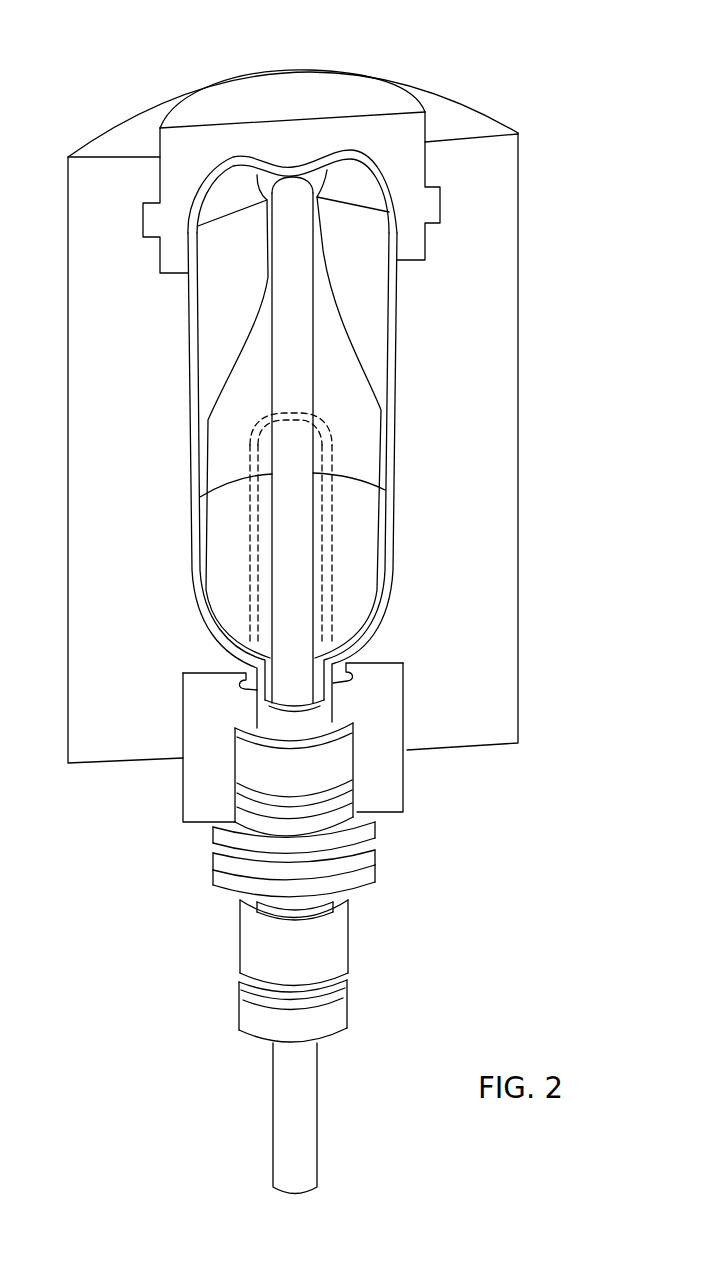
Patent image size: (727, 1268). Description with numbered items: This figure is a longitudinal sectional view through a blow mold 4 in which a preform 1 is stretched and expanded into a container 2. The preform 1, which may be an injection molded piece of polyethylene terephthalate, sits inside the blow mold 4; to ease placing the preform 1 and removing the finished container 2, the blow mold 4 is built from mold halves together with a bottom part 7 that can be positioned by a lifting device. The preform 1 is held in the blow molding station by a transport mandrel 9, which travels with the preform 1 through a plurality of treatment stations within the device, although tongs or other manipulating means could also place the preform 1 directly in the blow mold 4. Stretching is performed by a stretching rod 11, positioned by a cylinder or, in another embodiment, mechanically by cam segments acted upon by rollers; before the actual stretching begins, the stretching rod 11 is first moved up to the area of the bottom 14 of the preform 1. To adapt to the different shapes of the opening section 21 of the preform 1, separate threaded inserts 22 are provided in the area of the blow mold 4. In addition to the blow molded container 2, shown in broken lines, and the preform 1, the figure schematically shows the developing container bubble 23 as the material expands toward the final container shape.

The preform 1 is at (327, 563).
The container 2 is at (395, 357).
The blow mold 4 is at (480, 417).
The bottom part 7 is at (370, 85).
The transport mandrel 9 is at (363, 875).
The stretching rod 11 is at (273, 1132).
The bottom of the preform 14 is at (323, 413).
The opening section 21 is at (335, 695).
The threaded inserts 22 is at (390, 773).
The container bubble 23 is at (338, 320).